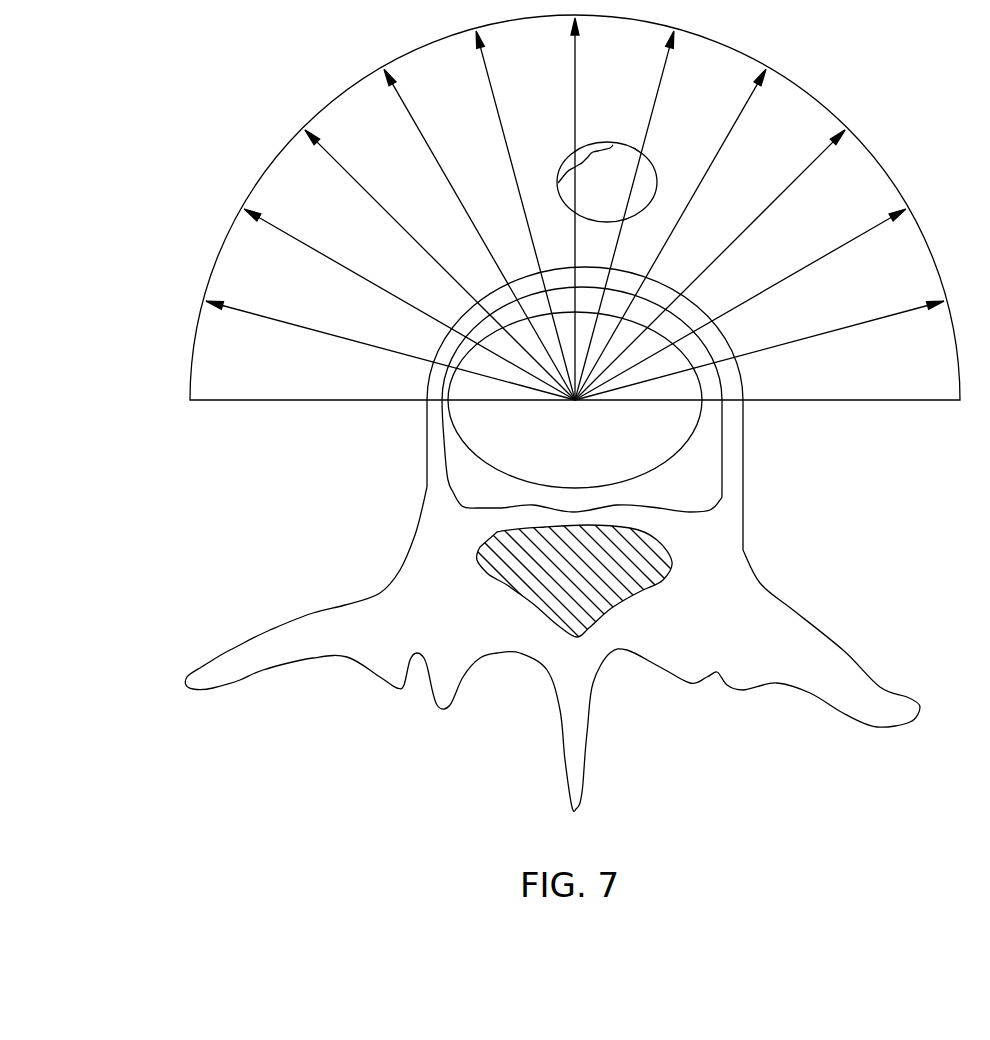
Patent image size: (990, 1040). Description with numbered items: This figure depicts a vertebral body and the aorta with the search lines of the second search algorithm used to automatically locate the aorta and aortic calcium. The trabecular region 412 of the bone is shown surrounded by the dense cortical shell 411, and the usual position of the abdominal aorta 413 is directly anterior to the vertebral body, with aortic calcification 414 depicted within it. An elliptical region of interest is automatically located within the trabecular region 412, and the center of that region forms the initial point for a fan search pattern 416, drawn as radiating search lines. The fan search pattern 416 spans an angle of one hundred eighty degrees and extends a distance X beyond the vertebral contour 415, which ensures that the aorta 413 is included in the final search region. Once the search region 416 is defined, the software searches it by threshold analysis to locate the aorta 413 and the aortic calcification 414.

The dense cortical shell 411 is at (312, 625).
The trabecular region of the vertebral body 412 is at (470, 475).
The abdominal aorta 413 is at (645, 178).
The aortic calcification 414 is at (568, 160).
The vertebral contour 415 is at (825, 340).
The fan search pattern 416 is at (877, 153).